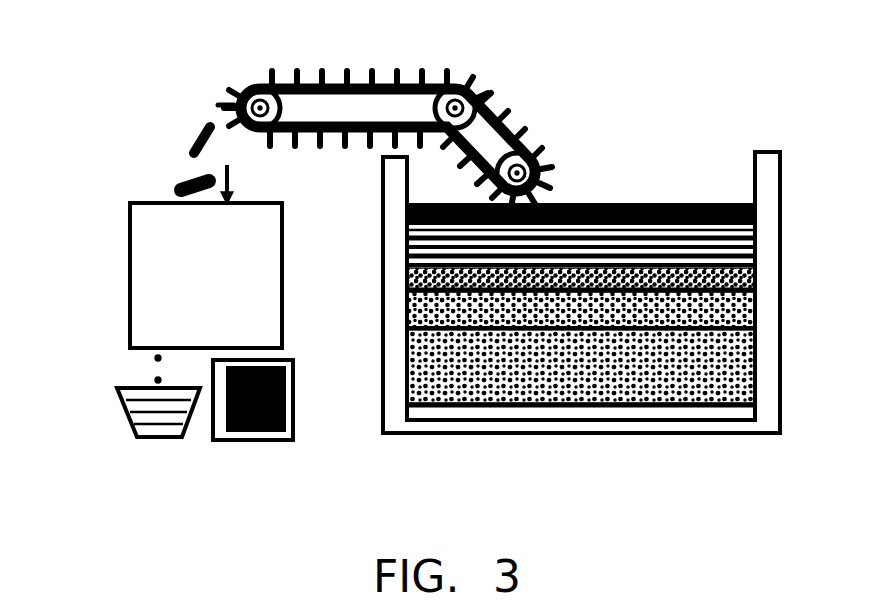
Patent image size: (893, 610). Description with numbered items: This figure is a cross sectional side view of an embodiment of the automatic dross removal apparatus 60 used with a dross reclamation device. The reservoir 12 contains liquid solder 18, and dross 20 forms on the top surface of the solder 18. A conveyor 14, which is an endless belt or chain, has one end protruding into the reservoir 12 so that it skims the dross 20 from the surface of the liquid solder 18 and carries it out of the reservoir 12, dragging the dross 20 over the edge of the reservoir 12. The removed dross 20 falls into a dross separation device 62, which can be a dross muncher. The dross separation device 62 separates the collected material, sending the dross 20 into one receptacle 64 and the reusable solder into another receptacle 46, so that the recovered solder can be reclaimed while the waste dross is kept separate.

The automatic dross removal apparatus 60 is at (643, 58).
The conveyor 14 is at (520, 96).
The reservoir 12 is at (780, 280).
The liquid solder 18 is at (757, 358).
The dross 20 is at (175, 193).
The dross separation device 62 is at (127, 253).
The receptacle 46 is at (135, 378).
The receptacle 64 is at (242, 450).